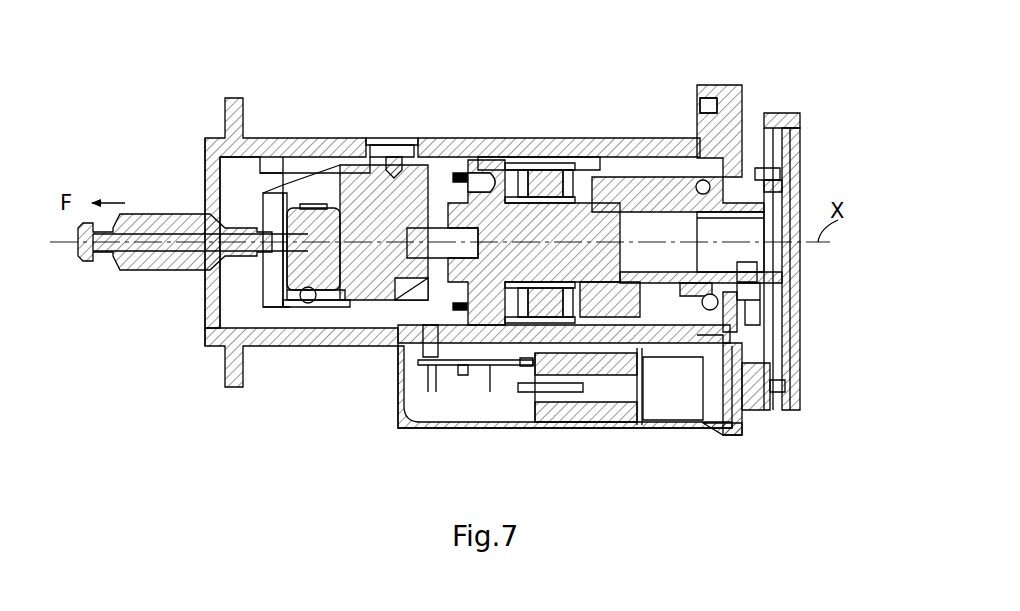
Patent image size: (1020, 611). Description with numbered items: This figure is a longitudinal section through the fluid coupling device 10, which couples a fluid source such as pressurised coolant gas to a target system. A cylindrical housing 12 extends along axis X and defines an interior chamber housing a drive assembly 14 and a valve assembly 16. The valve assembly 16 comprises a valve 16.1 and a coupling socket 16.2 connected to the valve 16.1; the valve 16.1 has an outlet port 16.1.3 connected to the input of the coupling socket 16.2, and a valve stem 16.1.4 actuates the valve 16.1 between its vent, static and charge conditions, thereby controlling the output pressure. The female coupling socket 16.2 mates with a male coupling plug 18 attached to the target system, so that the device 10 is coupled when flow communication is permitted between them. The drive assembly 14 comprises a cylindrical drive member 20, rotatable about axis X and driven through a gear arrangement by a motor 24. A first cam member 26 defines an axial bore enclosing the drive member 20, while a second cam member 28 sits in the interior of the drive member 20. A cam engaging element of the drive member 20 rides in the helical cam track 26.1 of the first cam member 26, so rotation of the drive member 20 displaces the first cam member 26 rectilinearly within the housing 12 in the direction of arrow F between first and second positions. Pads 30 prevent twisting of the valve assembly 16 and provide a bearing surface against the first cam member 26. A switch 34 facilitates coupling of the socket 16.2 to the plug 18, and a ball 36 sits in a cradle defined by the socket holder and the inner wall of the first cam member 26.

The fluid coupling device 10 is at (814, 46).
The housing 12 is at (510, 138).
The drive assembly 14 is at (243, 322).
The valve assembly 16 is at (440, 188).
The valve 16.1 is at (565, 215).
The outlet port 16.1.3 is at (436, 274).
The valve stem 16.1.4 is at (627, 300).
The coupling socket 16.2 is at (380, 270).
The male coupling plug 18 is at (155, 222).
The cylindrical drive member 20 is at (690, 192).
The motor 24 is at (668, 394).
The first cam member 26 is at (258, 176).
The cam track 26.1 is at (636, 152).
The second cam member 28 is at (718, 272).
The pads 30 is at (512, 188).
The switch 34 is at (302, 277).
The ball 36 is at (310, 300).